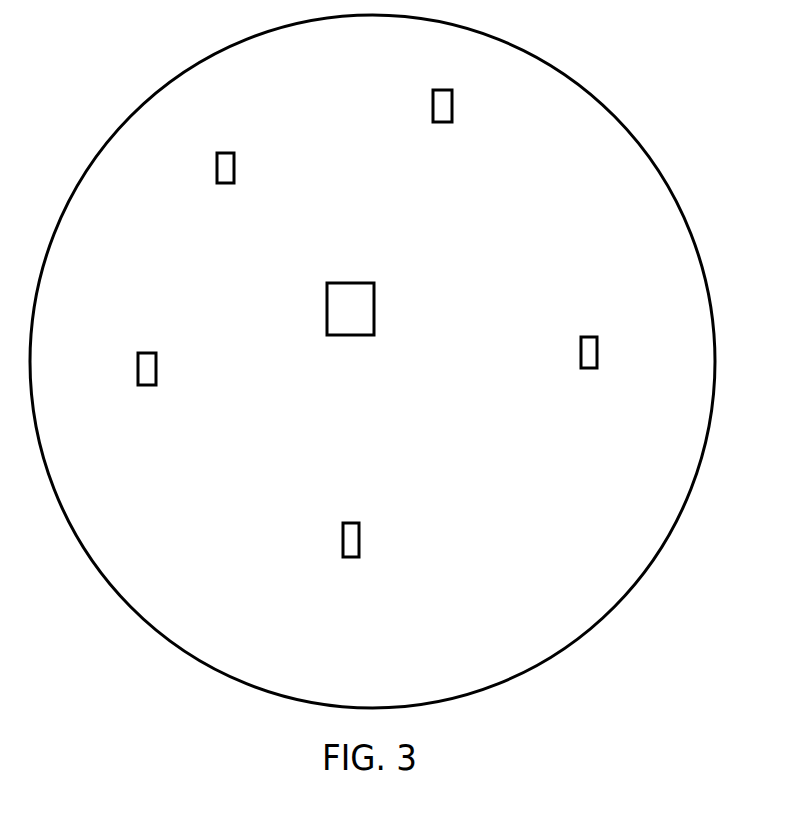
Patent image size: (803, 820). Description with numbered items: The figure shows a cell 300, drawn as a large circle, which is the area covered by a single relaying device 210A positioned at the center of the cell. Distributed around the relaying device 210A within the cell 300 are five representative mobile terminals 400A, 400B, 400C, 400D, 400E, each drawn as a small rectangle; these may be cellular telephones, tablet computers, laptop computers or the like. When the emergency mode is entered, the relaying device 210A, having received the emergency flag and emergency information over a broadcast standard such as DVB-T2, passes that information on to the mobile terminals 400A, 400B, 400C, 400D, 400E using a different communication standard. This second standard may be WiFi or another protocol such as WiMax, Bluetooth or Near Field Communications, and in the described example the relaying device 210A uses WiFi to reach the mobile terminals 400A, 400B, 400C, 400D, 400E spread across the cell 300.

The cell 300 is at (548, 63).
The relaying device 210A is at (374, 309).
The mobile terminal 400A is at (234, 166).
The mobile terminal 400B is at (452, 106).
The mobile terminal 400C is at (597, 352).
The mobile terminal 400D is at (359, 539).
The mobile terminal 400E is at (156, 368).